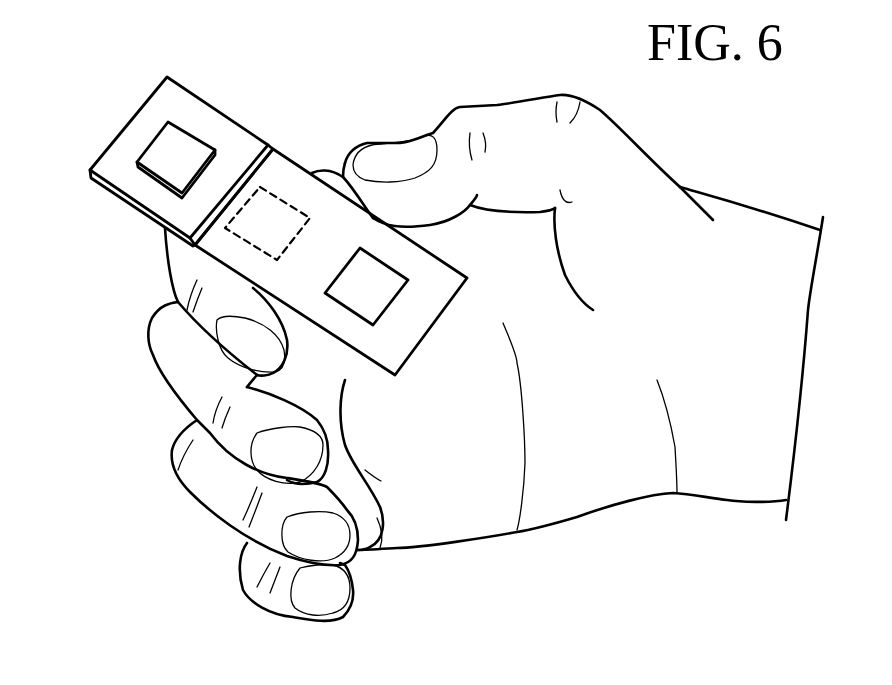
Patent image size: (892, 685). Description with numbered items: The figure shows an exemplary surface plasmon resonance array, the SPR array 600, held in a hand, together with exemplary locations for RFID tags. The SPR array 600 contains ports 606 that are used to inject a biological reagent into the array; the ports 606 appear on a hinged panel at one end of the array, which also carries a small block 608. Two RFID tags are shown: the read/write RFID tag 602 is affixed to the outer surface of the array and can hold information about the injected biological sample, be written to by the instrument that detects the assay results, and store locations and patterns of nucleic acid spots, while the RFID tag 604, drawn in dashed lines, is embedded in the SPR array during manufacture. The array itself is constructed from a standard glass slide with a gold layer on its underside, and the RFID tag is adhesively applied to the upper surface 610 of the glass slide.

The SPR array 600 is at (244, 72).
The read/write RFID tag 602 is at (390, 290).
The RFID tag 604 is at (273, 203).
The ports 606 is at (135, 115).
The button on cover 608 is at (167, 160).
The upper surface 610 is at (405, 348).